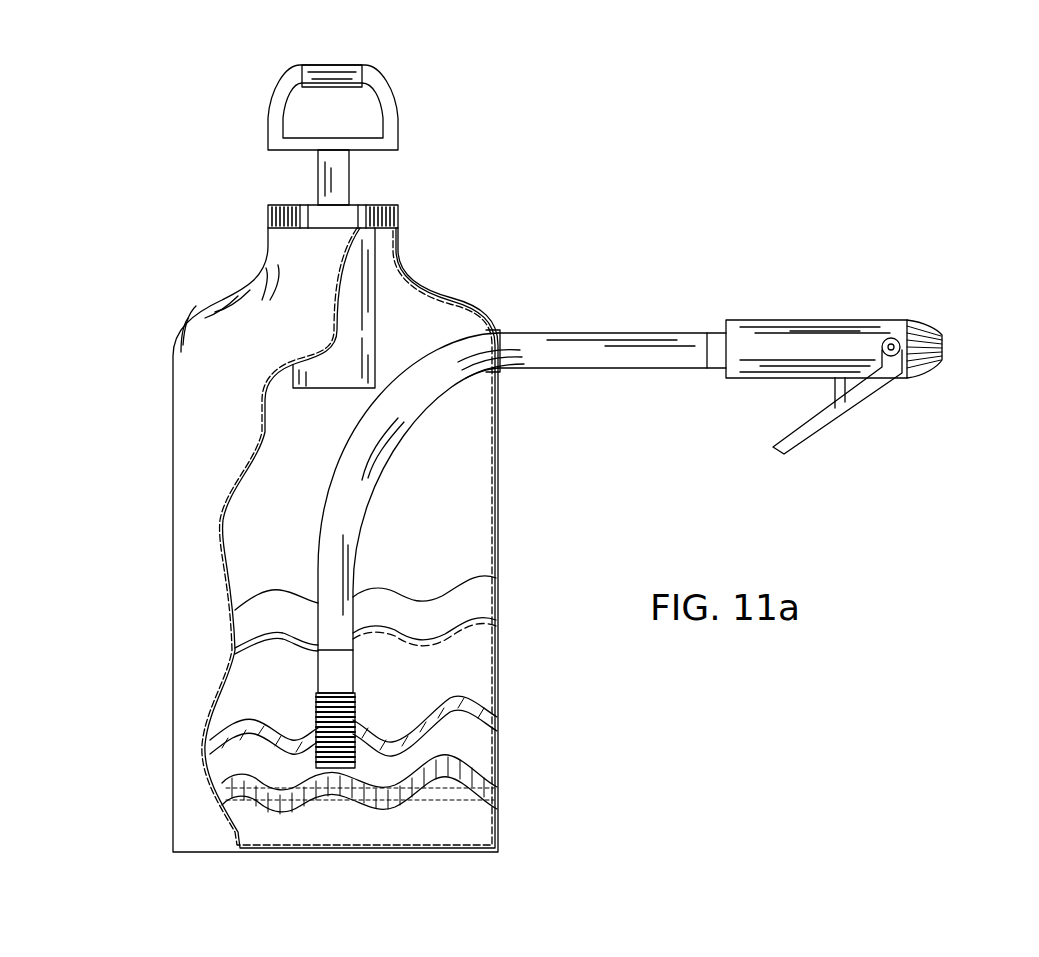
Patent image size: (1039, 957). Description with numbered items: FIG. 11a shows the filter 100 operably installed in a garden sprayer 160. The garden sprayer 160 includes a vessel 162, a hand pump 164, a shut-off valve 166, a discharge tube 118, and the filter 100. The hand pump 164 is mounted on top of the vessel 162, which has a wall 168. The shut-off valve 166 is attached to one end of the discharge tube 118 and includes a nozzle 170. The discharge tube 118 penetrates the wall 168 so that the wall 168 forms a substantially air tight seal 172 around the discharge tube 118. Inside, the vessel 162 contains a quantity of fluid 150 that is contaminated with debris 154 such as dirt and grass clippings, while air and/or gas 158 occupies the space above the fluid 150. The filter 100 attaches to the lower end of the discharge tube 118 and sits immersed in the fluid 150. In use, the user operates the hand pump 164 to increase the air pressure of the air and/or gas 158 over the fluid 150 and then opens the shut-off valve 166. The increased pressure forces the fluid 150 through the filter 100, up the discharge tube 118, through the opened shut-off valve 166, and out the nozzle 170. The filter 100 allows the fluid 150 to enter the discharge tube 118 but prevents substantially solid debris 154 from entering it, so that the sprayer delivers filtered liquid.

The filter 100 is at (355, 688).
The discharge tube 118 is at (528, 333).
The fluid 150 is at (283, 699).
The debris 154 is at (497, 620).
The air and/or gas 158 is at (328, 455).
The garden sprayer 160 is at (195, 253).
The vessel 162 is at (210, 490).
The hand pump 164 is at (402, 103).
The shut-off valve 166 is at (812, 313).
The wall 168 is at (498, 493).
The nozzle 170 is at (921, 370).
The air tight seal 172 is at (500, 372).